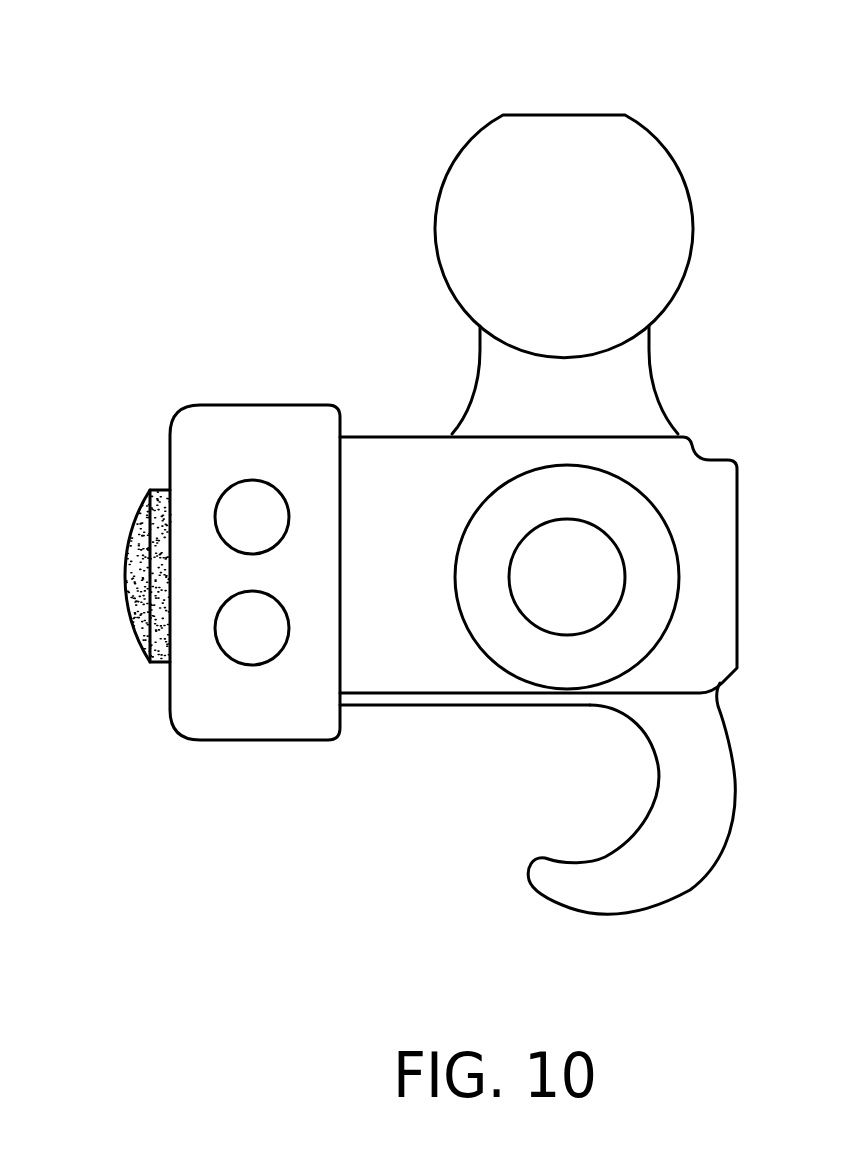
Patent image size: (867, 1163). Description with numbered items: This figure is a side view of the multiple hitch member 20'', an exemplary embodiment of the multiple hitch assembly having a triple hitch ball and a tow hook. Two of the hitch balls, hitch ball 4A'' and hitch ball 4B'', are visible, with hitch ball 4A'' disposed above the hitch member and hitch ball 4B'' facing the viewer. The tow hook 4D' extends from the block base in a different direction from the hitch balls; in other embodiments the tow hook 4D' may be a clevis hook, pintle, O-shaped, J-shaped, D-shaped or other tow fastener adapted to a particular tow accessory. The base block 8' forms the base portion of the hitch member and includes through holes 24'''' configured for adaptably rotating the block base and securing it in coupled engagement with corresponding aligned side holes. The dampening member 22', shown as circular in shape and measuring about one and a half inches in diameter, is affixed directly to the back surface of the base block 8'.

The multiple hitch member 20'' is at (436, 467).
The hitch ball 4A'' is at (521, 236).
The hitch ball 4B'' is at (631, 577).
The tow hook 4D' is at (679, 798).
The base block 8' is at (221, 567).
The through holes 24'''' is at (189, 584).
The dampening member 22' is at (106, 576).